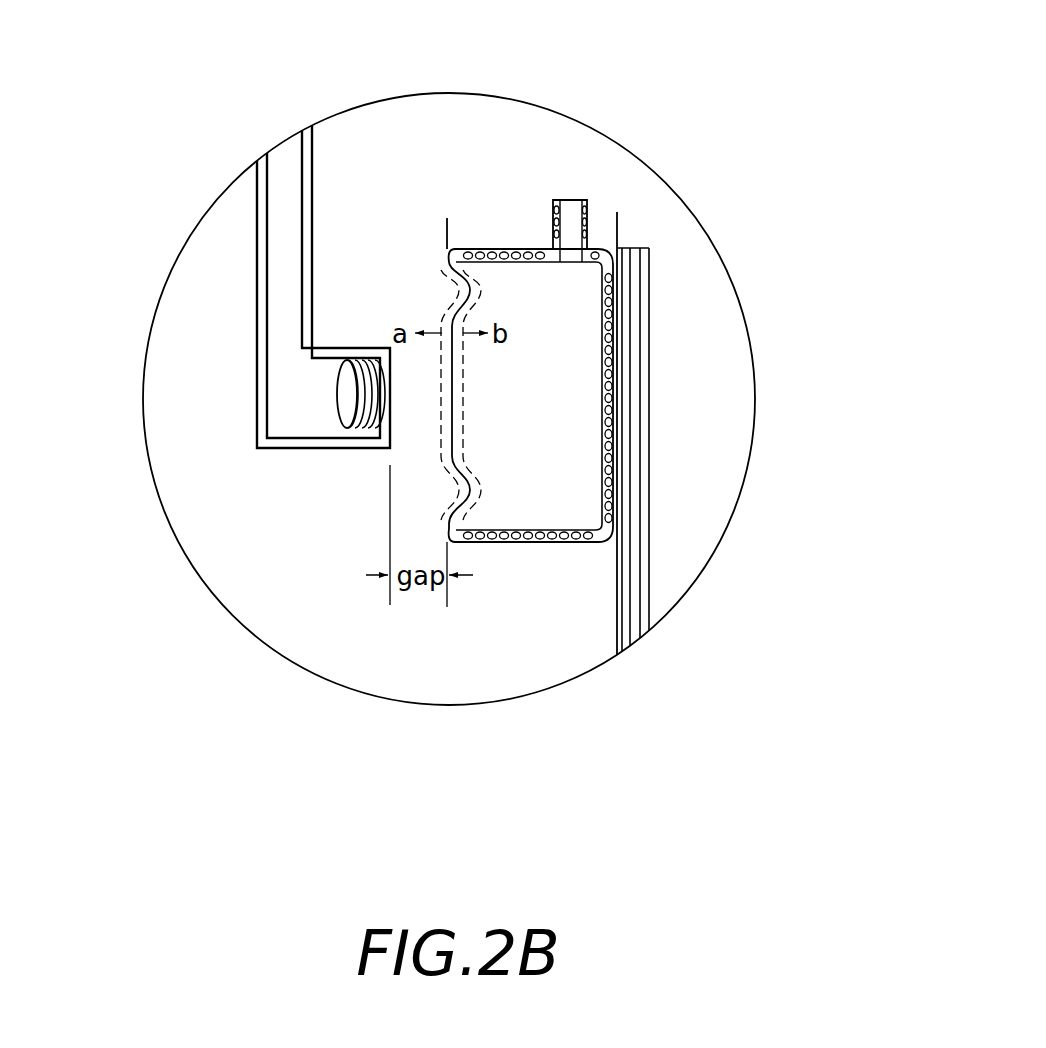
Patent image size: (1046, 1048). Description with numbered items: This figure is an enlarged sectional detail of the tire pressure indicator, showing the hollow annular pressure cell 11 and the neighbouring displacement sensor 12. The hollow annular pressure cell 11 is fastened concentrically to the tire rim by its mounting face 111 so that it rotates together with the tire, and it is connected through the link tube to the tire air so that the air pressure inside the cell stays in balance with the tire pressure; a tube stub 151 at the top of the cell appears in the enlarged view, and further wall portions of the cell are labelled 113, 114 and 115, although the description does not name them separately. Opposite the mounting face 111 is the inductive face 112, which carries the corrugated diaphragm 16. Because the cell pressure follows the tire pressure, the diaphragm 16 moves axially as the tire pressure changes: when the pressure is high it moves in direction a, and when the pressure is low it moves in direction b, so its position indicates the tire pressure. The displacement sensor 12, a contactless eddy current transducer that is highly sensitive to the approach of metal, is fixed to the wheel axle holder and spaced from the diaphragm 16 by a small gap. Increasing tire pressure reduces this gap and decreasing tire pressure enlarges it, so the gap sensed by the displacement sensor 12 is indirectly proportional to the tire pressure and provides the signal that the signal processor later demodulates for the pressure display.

The hollow annular pressure cell 11 is at (563, 369).
The mounting face 111 is at (620, 224).
The inductive face 112 is at (446, 232).
The bottom wall 113 is at (517, 545).
The top wall 114 is at (505, 249).
The elastic layer 115 is at (612, 312).
The nozzle 151 is at (586, 202).
The displacement sensor 12 is at (341, 390).
The corrugated diaphragm 16 is at (442, 426).